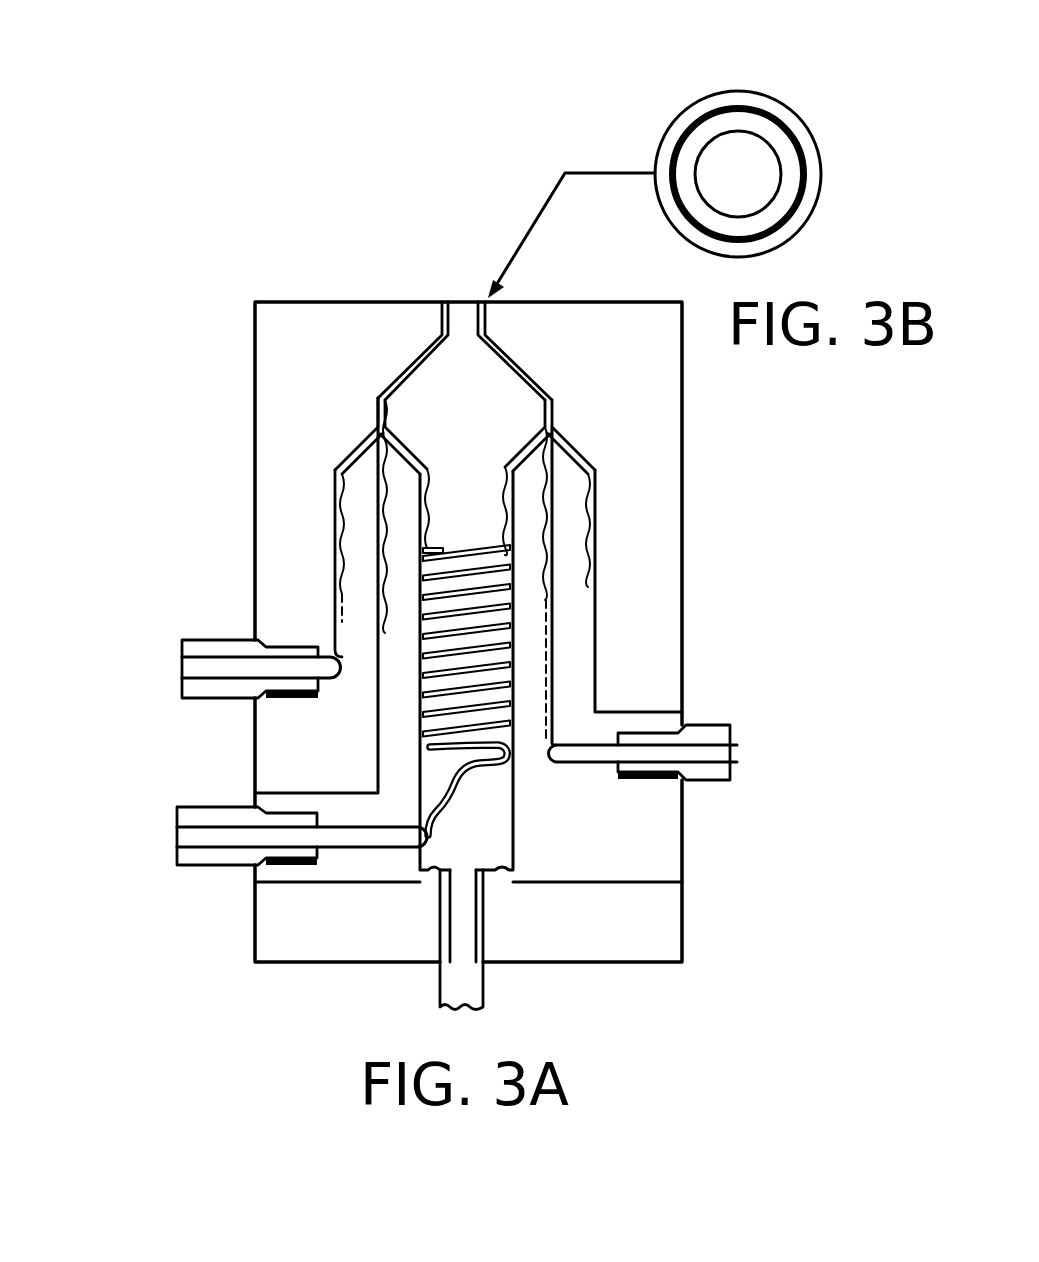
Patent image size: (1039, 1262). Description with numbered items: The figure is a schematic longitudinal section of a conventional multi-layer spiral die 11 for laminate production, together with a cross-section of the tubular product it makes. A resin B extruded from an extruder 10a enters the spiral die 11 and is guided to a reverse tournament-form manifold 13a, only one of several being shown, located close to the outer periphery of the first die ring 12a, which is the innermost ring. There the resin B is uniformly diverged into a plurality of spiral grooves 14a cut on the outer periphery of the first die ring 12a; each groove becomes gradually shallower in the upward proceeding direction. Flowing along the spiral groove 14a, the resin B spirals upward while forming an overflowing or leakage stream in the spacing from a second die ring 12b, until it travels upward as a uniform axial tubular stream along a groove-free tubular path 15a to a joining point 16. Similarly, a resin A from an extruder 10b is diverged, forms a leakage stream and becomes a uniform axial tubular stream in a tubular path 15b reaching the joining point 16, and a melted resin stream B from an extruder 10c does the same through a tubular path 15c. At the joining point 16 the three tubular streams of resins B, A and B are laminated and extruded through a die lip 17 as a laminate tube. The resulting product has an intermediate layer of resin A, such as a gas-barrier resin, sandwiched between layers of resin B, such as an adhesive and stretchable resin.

In FIG. 3A, the extruder 10a is at (108, 823).
In FIG. 3A, the extruder 10b is at (812, 745).
In FIG. 3A, the extruder 10c is at (108, 658).
In FIG. 3A, the spiral die 11 is at (682, 530).
In FIG. 3A, the first die ring 12a is at (500, 858).
In FIG. 3A, the second die ring 12b is at (397, 665).
In FIG. 3A, the tournament-form manifold 13a is at (473, 782).
In FIG. 3A, the spiral groove 14a is at (440, 727).
In FIG. 3A, the groove-free tubular path 15a is at (428, 497).
In FIG. 3A, the tubular path 15b is at (540, 491).
In FIG. 3A, the tubular path 15c is at (335, 482).
In FIG. 3A, the joining point 16 is at (387, 423).
In FIG. 3A, the die lip 17 is at (442, 300).
In FIG. 3B, the resin A is at (735, 104).
In FIG. 3B, the resin B is at (686, 117).